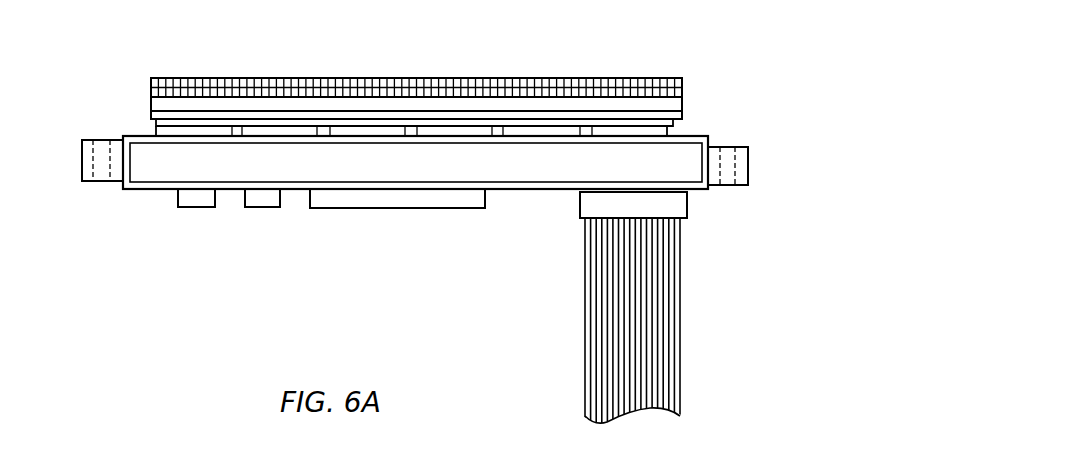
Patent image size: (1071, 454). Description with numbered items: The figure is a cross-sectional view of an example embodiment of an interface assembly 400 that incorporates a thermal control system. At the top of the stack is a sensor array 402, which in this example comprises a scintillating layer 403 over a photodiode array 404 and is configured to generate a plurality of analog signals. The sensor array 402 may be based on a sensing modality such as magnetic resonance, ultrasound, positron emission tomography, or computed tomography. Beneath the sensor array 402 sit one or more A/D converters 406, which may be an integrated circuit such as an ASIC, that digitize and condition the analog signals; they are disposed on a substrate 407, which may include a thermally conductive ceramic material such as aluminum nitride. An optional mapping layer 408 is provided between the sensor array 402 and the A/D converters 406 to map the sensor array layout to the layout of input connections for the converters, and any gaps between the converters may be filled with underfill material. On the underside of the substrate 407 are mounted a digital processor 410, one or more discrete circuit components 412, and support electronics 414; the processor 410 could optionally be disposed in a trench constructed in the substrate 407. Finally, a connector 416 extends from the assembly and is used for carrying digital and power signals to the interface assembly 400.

The interface assembly 400 is at (438, 29).
The sensor array 402 is at (145, 87).
The scintillating layer 403 is at (687, 93).
The photodiode array 404 is at (687, 106).
The A/D converters 406 is at (360, 130).
The substrate 407 is at (530, 163).
The mapping layer 408 is at (678, 119).
The digital processor 410 is at (397, 208).
The discrete circuit components 412 is at (263, 208).
The support electronics 414 is at (187, 208).
The connector 416 is at (687, 205).